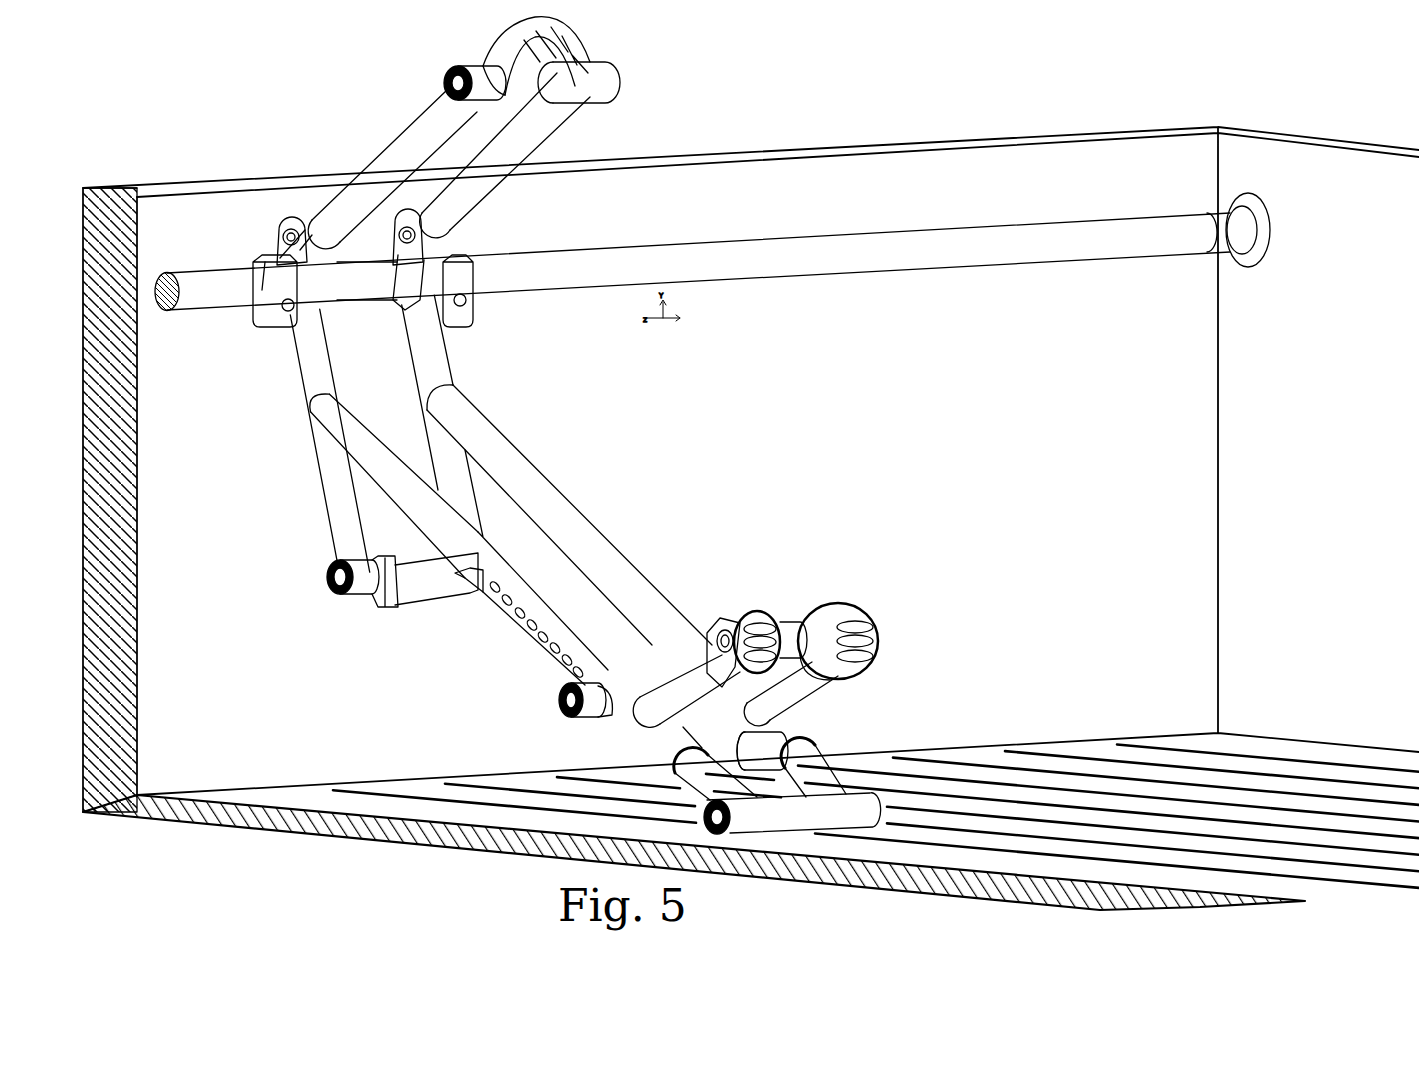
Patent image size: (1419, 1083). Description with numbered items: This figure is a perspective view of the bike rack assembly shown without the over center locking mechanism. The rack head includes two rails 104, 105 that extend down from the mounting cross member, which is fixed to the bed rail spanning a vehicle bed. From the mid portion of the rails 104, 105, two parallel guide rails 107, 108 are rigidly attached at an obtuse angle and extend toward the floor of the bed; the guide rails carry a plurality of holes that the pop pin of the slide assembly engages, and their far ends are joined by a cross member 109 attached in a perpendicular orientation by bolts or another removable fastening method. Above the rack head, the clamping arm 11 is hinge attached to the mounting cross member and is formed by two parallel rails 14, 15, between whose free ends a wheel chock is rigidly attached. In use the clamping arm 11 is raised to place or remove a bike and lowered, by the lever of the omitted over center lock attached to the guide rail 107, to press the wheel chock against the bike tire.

The clamping arm 11 is at (410, 70).
The parallel rail 14 is at (410, 137).
The parallel rail 15 is at (532, 137).
The rail 104 is at (318, 371).
The rail 105 is at (438, 362).
The guide rail 107 is at (373, 440).
The guide rail 108 is at (507, 450).
The cross member 109 is at (837, 813).